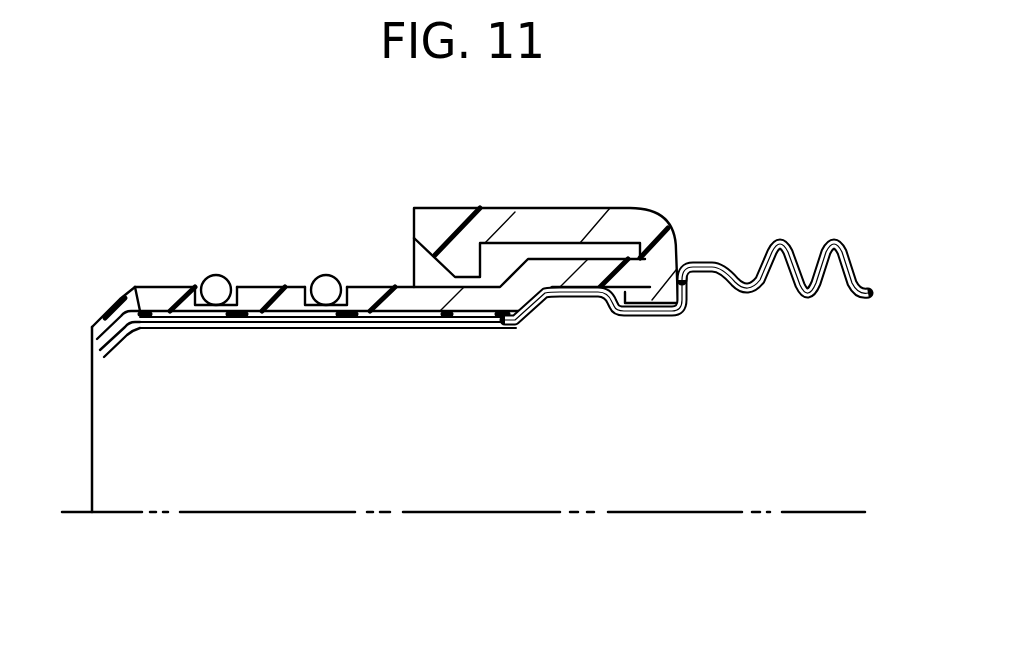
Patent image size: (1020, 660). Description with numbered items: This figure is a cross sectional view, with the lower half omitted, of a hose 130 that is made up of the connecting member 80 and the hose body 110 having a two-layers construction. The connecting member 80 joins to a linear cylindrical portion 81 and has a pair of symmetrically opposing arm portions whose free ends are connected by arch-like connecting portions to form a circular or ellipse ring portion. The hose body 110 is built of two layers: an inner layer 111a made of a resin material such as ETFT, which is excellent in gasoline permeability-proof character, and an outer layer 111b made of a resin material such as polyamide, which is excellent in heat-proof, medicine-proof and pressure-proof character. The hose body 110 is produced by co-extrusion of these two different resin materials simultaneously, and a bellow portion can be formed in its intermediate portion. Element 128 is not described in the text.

The connecting member 80 is at (512, 176).
The linear cylindrical portion 81 is at (376, 286).
The hose body 110 is at (748, 260).
The inner layer 111a is at (287, 327).
The outer layer 111b is at (247, 320).
The bent lip portion 128 is at (130, 300).
The hose 130 is at (710, 199).